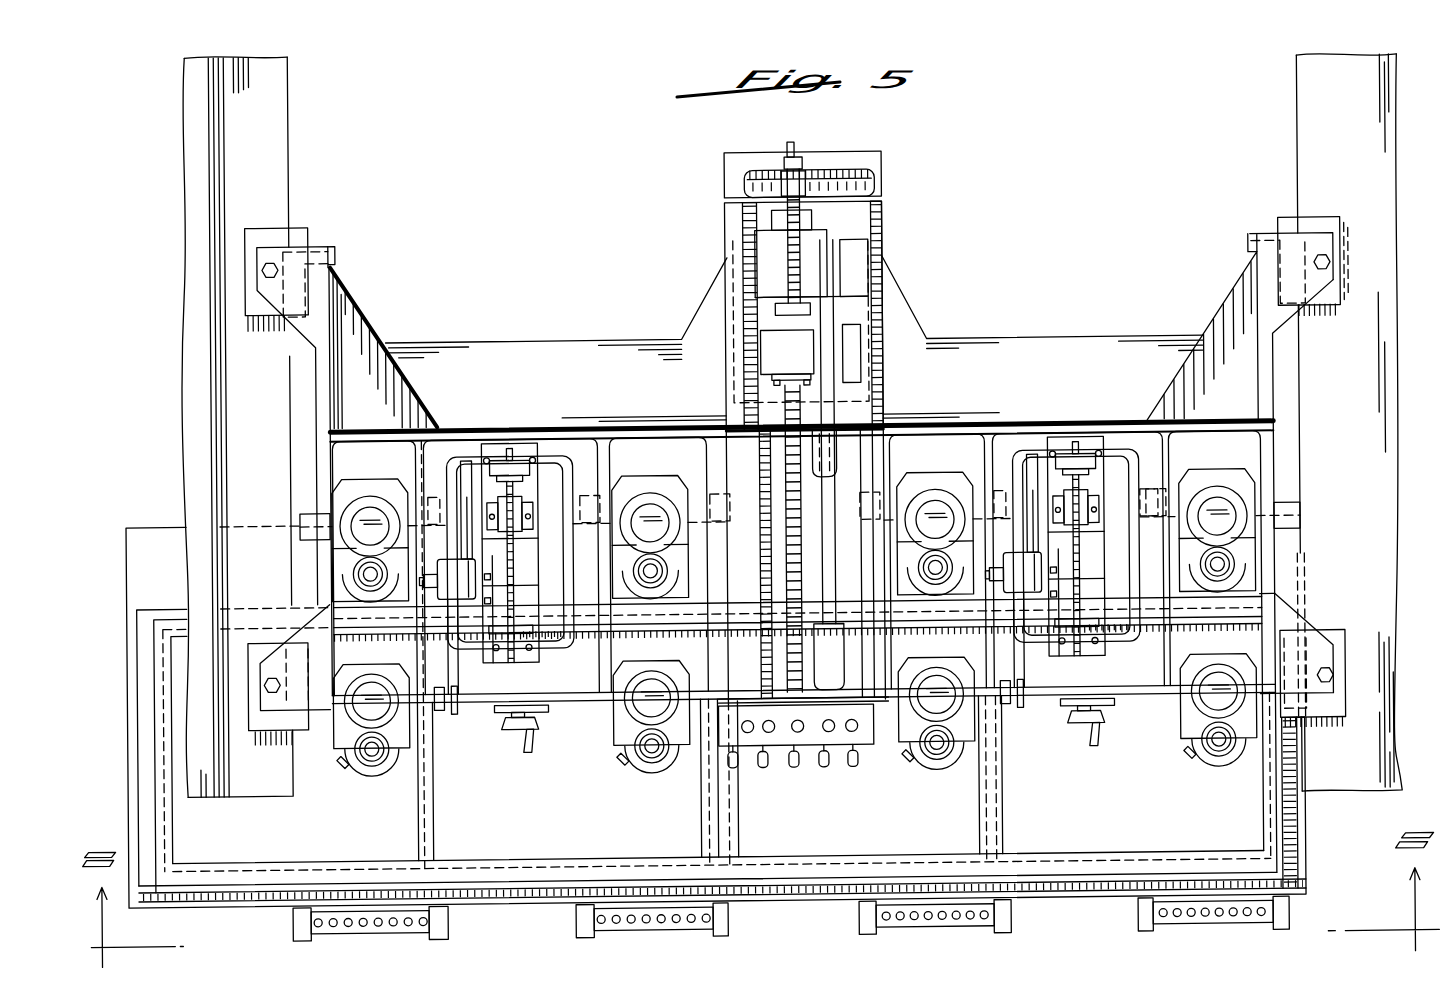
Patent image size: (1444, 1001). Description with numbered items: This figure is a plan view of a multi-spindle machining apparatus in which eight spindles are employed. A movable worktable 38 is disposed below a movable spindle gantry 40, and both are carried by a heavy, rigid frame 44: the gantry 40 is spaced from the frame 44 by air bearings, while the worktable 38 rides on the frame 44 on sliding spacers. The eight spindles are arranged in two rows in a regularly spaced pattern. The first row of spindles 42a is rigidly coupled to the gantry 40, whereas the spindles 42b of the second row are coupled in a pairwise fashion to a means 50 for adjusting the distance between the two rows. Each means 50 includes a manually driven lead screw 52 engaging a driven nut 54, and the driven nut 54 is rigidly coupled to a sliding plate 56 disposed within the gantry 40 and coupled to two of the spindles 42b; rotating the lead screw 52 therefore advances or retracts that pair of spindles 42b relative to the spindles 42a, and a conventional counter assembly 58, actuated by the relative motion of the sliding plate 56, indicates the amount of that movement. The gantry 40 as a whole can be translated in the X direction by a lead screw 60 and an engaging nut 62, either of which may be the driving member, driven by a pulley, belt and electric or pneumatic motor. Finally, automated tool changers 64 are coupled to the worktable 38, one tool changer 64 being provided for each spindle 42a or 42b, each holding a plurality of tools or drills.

The movable worktable 38 is at (1293, 877).
The movable spindle gantry 40 is at (1278, 436).
The spindles 42a is at (371, 747).
The spindles 42b is at (368, 570).
The frame 44 is at (279, 128).
The means for adjusting the distance between the first and second row 50 is at (523, 378).
The lead screw 52 is at (512, 685).
The driven nut 54 is at (521, 495).
The sliding plate 56 is at (465, 504).
The counter assembly 58 is at (456, 665).
The lead screw 60 is at (795, 260).
The engaging nut 62 is at (784, 354).
The automated tool changer 64 is at (447, 923).